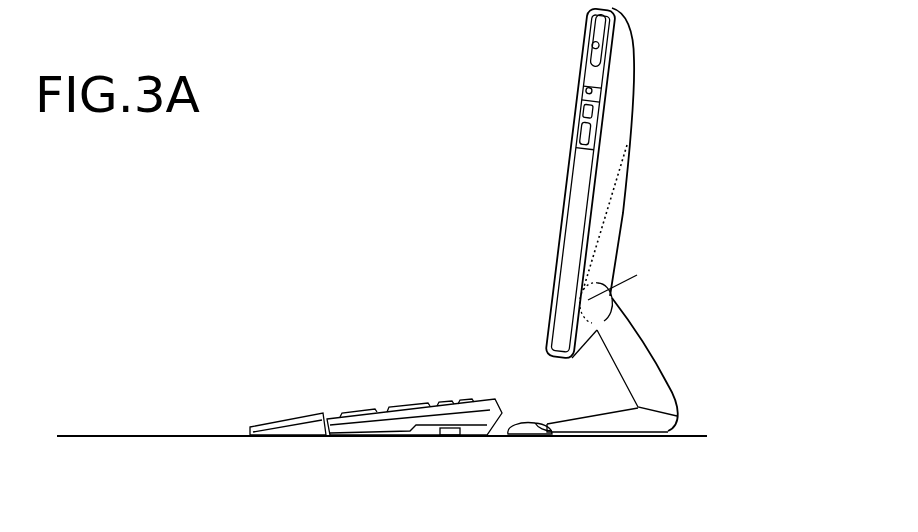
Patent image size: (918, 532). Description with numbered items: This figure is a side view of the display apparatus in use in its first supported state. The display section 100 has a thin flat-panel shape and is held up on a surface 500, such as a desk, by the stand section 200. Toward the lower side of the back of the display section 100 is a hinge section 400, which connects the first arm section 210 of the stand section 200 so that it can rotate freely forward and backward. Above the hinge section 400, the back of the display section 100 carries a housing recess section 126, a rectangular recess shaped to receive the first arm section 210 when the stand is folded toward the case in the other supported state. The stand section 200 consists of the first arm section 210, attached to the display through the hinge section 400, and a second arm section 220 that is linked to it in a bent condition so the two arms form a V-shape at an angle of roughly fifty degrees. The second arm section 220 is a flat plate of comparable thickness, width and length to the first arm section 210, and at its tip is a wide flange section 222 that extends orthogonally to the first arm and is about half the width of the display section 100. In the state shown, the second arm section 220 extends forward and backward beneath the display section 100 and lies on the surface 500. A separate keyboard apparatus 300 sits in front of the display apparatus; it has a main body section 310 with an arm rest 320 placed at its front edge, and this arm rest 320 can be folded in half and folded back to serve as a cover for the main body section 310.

The display section 100 is at (632, 97).
The housing recess section 126 is at (617, 212).
The hinge section 400 is at (645, 268).
The stand section 200 is at (625, 403).
The first arm section 210 is at (660, 368).
The second arm section 220 is at (608, 432).
The flange section 222 is at (522, 436).
The keyboard apparatus 300 is at (360, 345).
The main body section 310 is at (398, 413).
The arm rest 320 is at (273, 420).
The surface 500 is at (100, 437).